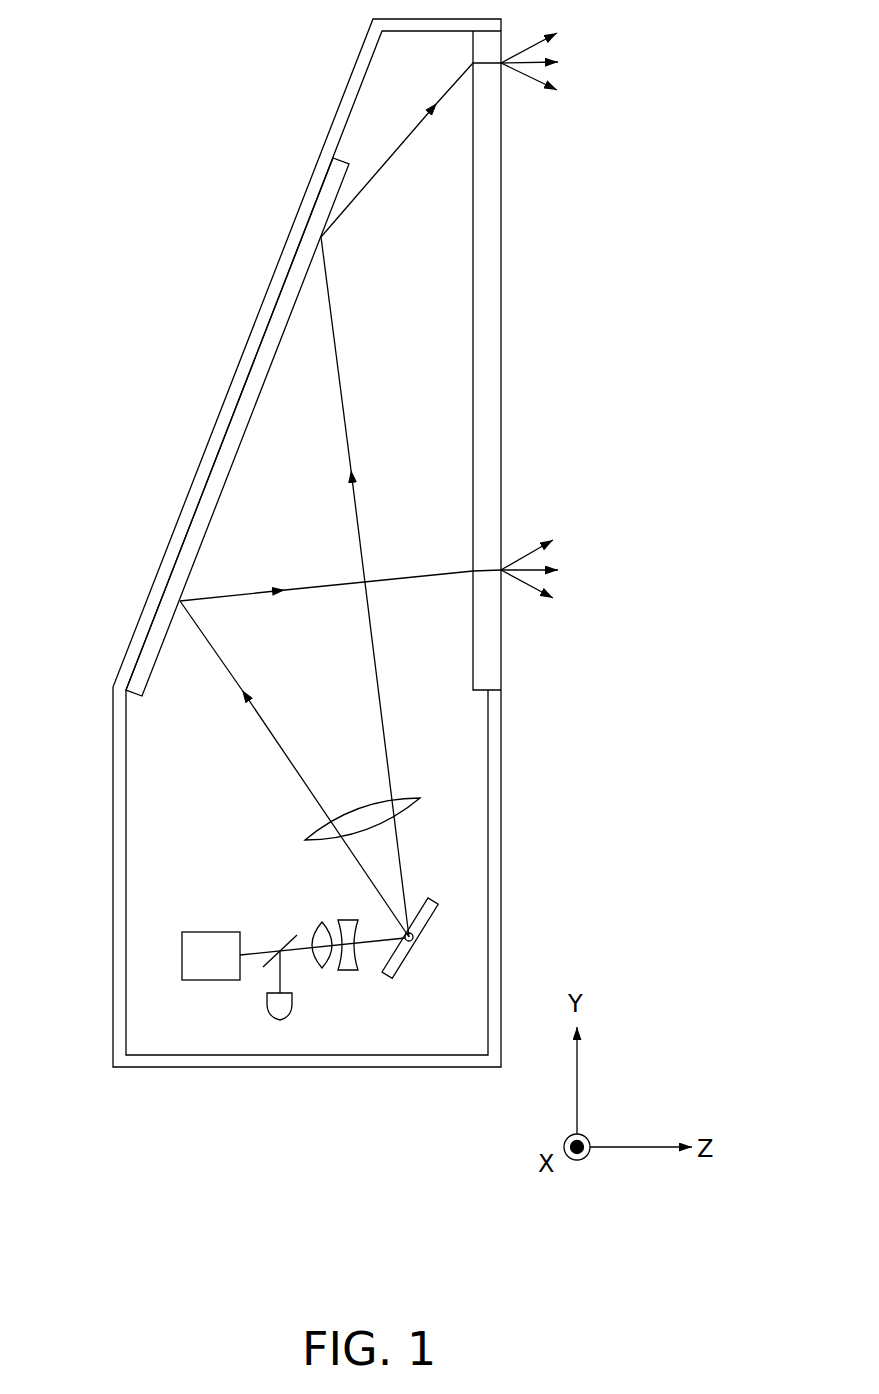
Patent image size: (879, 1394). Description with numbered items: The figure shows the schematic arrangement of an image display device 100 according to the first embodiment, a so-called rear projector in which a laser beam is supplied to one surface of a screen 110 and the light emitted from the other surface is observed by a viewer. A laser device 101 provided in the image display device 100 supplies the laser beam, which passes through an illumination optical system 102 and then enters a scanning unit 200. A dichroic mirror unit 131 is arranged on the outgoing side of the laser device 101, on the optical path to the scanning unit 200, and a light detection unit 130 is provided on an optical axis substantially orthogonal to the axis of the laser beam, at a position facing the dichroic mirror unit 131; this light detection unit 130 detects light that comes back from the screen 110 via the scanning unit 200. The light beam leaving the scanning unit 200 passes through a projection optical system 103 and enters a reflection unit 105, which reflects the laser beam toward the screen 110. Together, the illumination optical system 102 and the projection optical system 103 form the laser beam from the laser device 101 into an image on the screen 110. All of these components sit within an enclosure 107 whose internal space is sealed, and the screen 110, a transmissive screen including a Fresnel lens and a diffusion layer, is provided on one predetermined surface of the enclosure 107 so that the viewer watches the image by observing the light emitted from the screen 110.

The image display device 100 is at (243, 118).
The laser device 101 is at (193, 962).
The illumination optical system 102 is at (370, 975).
The projection optical system 103 is at (400, 803).
The reflection unit 105 is at (163, 620).
The enclosure 107 is at (493, 882).
The screen 110 is at (495, 277).
The light detection unit 130 is at (272, 1013).
The dichroic mirror unit 131 is at (290, 938).
The scanning unit 200 is at (403, 963).